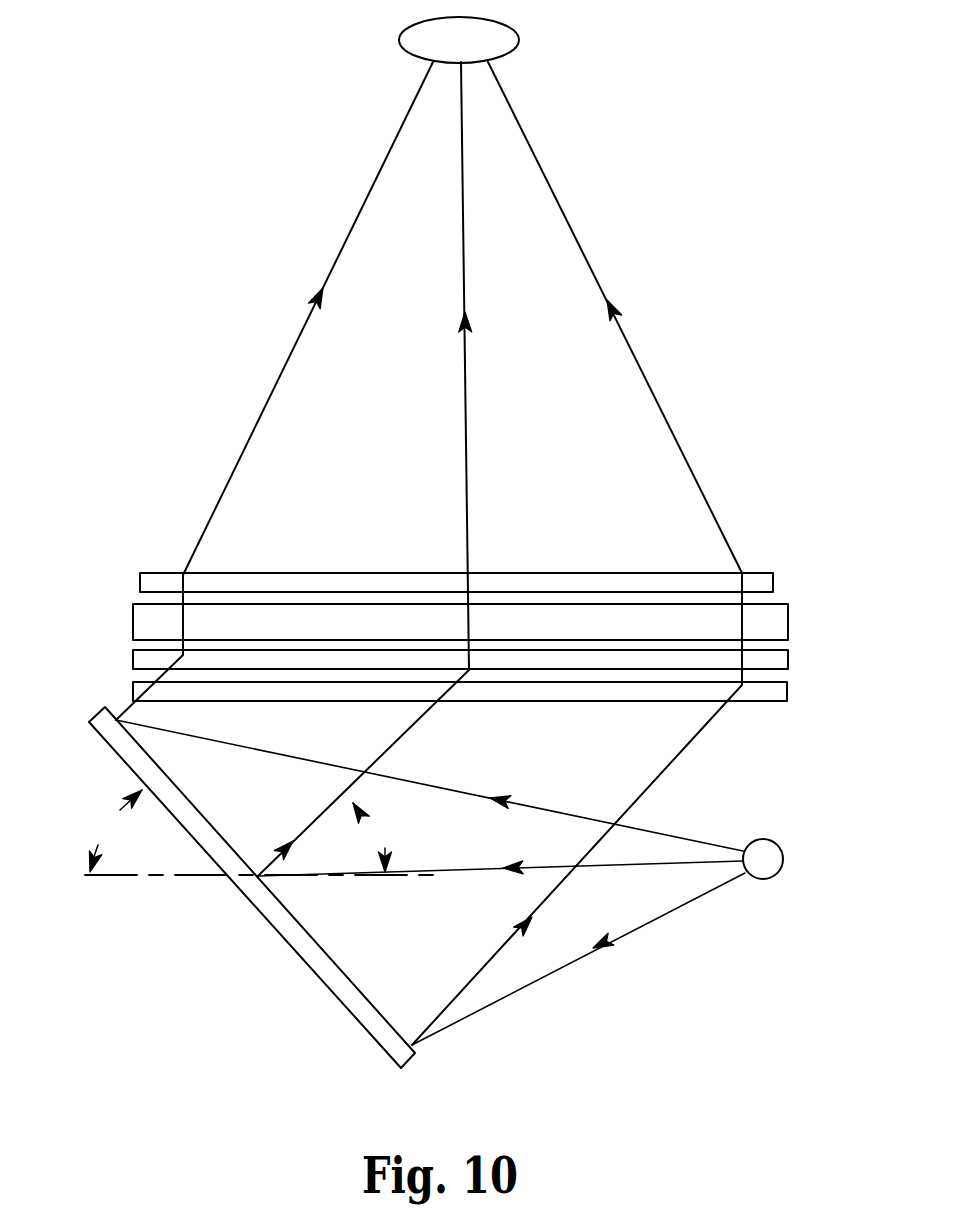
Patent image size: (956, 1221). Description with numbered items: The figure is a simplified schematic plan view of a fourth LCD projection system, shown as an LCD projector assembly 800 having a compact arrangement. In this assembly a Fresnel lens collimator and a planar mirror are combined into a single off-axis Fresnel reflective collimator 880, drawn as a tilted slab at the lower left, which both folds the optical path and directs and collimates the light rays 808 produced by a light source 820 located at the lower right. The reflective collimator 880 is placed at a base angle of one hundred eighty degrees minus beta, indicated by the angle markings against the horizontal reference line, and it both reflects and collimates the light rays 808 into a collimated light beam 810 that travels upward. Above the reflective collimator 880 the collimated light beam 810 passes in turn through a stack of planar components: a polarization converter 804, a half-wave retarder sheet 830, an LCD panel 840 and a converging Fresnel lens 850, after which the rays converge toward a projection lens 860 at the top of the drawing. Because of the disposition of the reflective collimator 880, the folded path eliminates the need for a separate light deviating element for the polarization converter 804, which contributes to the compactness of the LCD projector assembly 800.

The LCD projector assembly 800 is at (137, 287).
The projection lens 860 is at (412, 27).
The converging Fresnel lens 850 is at (140, 582).
The LCD panel 840 is at (133, 621).
The half-wave retarder sheet 830 is at (133, 658).
The polarization converter 804 is at (787, 693).
The off-axis Fresnel reflective collimator 880 is at (290, 948).
The light source 820 is at (765, 851).
The collimated light beam 810 is at (653, 783).
The light rays 808 is at (627, 933).